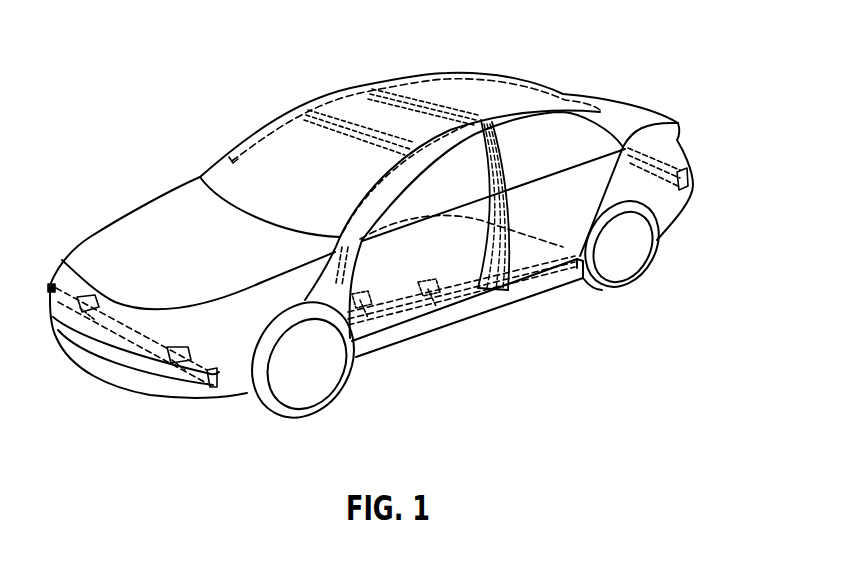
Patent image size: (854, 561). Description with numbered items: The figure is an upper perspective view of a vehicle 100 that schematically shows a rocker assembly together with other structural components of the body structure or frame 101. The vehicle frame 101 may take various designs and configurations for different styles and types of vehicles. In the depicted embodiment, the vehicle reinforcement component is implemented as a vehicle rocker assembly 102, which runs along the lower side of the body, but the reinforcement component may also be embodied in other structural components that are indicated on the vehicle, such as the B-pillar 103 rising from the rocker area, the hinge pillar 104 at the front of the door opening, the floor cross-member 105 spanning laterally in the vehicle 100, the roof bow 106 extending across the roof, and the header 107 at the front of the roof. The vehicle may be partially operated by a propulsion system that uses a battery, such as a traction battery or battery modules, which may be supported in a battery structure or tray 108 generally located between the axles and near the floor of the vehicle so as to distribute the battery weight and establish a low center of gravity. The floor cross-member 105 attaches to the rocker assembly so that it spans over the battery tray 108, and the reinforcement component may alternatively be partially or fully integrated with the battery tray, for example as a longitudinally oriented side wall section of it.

The vehicle 100 is at (162, 140).
The body structure or frame 101 is at (498, 77).
The vehicle rocker assembly 102 is at (388, 333).
The B-pillar 103 is at (503, 160).
The hinge pillar 104 is at (350, 268).
The floor cross-member 105 is at (433, 328).
The roof bow 106 is at (403, 90).
The header 107 is at (313, 110).
The battery structure or tray 108 is at (548, 226).